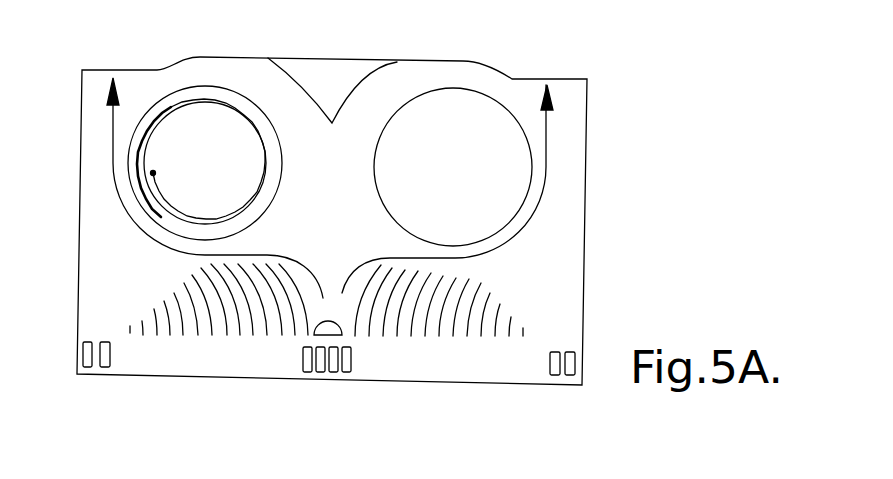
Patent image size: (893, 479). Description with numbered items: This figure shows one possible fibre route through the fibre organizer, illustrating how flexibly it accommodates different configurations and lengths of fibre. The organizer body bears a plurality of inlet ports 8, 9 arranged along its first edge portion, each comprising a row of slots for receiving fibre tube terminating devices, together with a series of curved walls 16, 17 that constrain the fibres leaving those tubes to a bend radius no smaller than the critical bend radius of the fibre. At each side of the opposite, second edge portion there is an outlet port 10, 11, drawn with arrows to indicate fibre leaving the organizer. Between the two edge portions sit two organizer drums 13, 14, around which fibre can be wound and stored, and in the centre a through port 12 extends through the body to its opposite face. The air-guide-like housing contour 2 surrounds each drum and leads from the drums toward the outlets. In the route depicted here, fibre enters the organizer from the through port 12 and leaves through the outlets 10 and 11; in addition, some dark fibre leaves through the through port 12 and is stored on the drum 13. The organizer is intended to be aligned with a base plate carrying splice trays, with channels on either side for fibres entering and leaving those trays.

The air guide housing 2 is at (113, 165).
The inlet port 8 is at (95, 368).
The inlet port 9 is at (563, 385).
The outlet port 10 is at (116, 70).
The outlet port 11 is at (546, 78).
The through port 12 is at (331, 322).
The organizer drum 13 is at (226, 182).
The organizer drum 14 is at (467, 186).
The curved wall 16 is at (207, 322).
The curved wall 17 is at (463, 322).